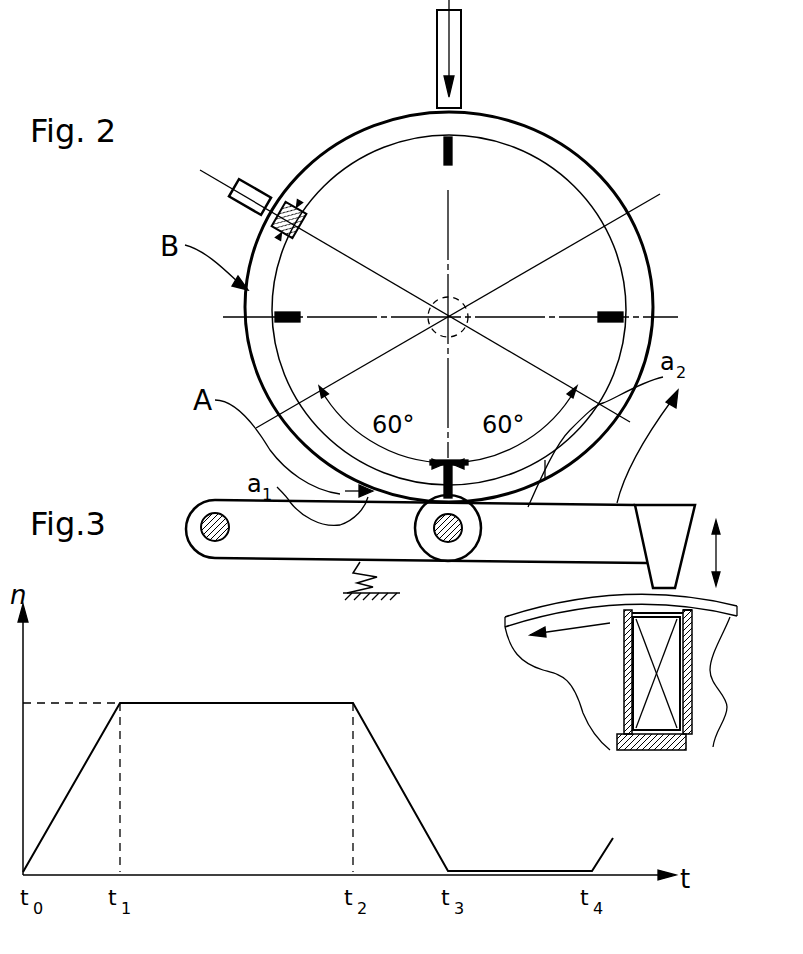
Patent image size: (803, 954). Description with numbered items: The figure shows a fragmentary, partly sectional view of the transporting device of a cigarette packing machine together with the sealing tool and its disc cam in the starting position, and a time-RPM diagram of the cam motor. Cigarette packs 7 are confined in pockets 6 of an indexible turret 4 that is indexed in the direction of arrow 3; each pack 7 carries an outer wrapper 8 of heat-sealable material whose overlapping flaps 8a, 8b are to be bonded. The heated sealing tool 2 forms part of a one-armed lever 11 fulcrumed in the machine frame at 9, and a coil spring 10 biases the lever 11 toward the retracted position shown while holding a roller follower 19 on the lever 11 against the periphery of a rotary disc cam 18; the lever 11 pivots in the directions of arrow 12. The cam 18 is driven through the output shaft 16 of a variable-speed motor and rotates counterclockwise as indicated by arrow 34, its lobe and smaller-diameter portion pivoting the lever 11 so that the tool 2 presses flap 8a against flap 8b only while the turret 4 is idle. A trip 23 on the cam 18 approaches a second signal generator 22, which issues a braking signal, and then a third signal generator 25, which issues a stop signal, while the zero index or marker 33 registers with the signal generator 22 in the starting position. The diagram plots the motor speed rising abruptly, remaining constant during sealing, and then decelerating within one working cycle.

The sealing tool 2 is at (668, 520).
The arrow 3 is at (521, 669).
The indexible turret 4 is at (721, 686).
The pocket 6 is at (608, 713).
The cigarette pack 7 is at (656, 706).
The outer wrapper 8 is at (633, 664).
The flap 8a is at (667, 612).
The flap 8b is at (697, 614).
The fulcrum 9 is at (230, 512).
The coil spring 10 is at (357, 567).
The one-armed lever 11 is at (615, 503).
The arrow 12 is at (720, 545).
The output shaft 16 is at (431, 297).
The rotary disc cam 18 is at (587, 163).
The roller follower 19 is at (480, 567).
The second signal generator 22 is at (465, 42).
The trip 23 is at (300, 205).
The third signal generator 25 is at (244, 183).
The zero index or marker 33 is at (442, 152).
The arrow 34 is at (672, 423).